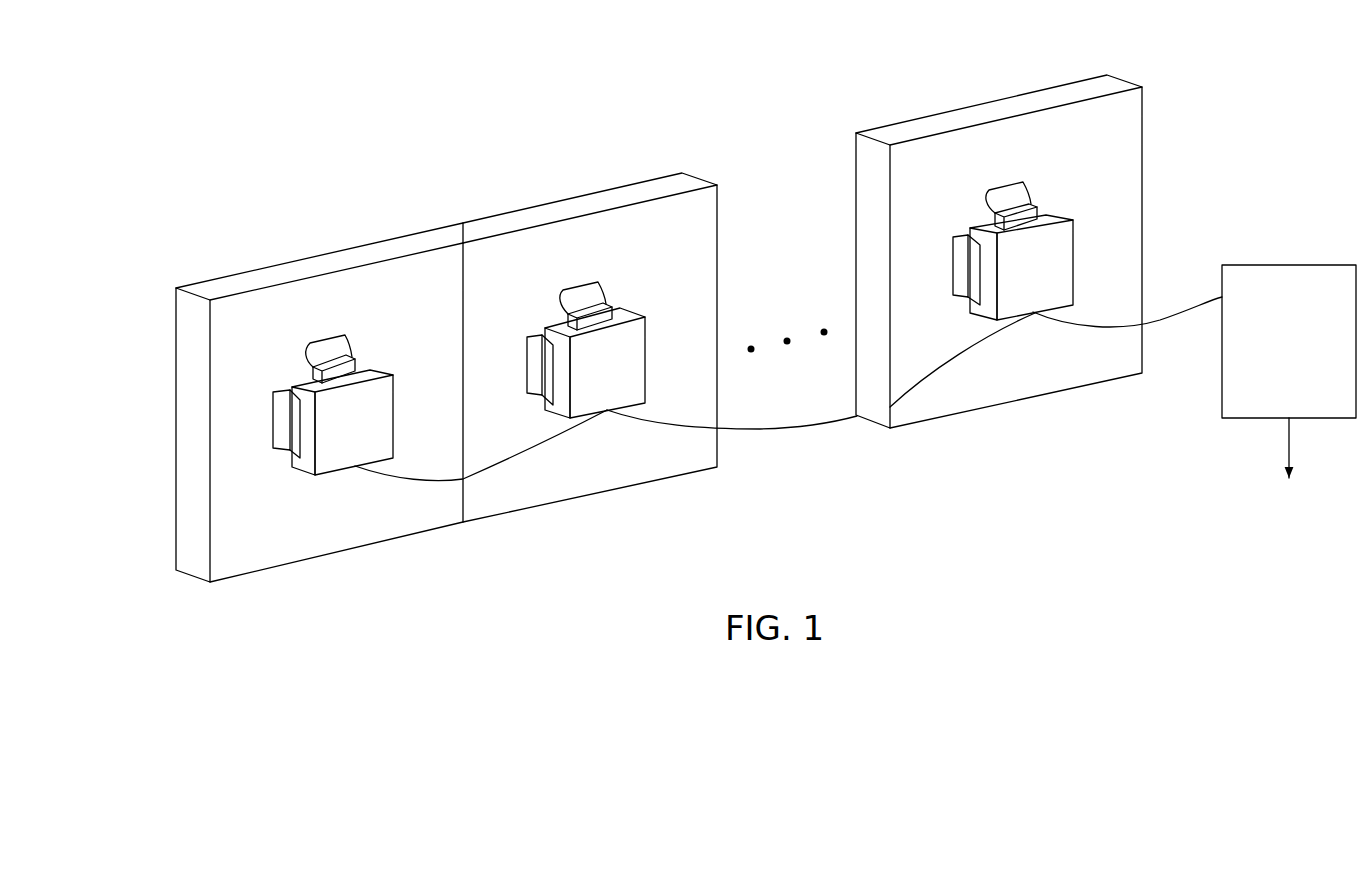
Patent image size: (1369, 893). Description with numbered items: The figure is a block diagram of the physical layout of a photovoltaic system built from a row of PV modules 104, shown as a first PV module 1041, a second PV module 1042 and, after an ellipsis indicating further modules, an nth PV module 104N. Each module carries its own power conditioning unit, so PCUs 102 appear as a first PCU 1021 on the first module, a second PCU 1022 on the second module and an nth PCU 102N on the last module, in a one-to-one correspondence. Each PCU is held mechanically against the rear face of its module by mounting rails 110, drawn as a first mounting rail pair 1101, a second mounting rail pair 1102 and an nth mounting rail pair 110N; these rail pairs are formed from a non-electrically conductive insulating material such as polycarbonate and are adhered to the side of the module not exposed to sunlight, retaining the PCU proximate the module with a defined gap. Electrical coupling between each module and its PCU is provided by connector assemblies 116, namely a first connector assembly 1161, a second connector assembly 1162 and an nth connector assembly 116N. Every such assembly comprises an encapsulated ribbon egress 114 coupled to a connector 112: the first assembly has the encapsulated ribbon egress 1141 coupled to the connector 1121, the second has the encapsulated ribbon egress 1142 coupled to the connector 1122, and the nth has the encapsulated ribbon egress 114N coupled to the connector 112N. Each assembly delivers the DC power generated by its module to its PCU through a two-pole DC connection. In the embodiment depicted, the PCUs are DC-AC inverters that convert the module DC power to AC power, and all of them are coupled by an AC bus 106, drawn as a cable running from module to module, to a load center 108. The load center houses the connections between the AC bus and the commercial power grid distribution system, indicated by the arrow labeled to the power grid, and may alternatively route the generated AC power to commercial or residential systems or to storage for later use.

The PV modules 104 is at (278, 186).
The first PV module 1041 is at (335, 253).
The second PV module 1042 is at (585, 192).
The nth PV module 104N is at (1012, 95).
The power conditioning units 102 is at (245, 456).
The first PCU 1021 is at (373, 435).
The second PCU 1022 is at (628, 378).
The nth PCU 102N is at (1055, 280).
The mounting rail pairs 110 is at (245, 492).
The first mounting rail pair 1101 is at (285, 455).
The second mounting rail pair 1102 is at (540, 400).
The nth mounting rail pair 110N is at (967, 298).
The connector 112 is at (240, 391).
The first connector 1121 is at (300, 382).
The second connector 1122 is at (540, 327).
The nth connector 112N is at (972, 228).
The encapsulated ribbon egress 114 is at (277, 368).
The first encapsulated ribbon egress 1141 is at (317, 337).
The second encapsulated ribbon egress 1142 is at (570, 283).
The nth encapsulated ribbon egress 114N is at (998, 183).
The connector assemblies 116 is at (277, 340).
The first connector assembly 1161 is at (355, 325).
The second connector assembly 1162 is at (610, 268).
The nth connector assembly 116N is at (1035, 168).
The AC bus 106 is at (1177, 312).
The load center 108 is at (1304, 388).